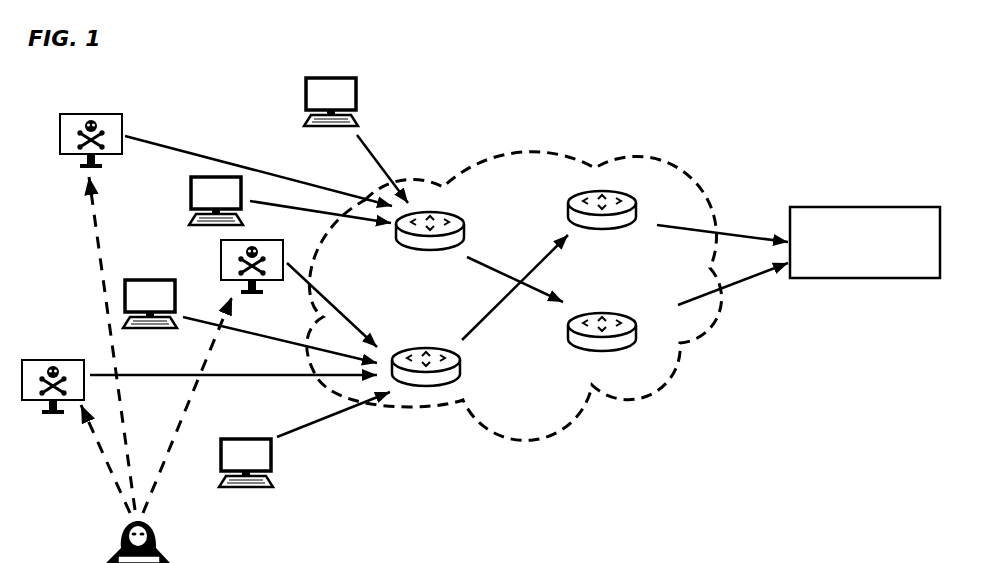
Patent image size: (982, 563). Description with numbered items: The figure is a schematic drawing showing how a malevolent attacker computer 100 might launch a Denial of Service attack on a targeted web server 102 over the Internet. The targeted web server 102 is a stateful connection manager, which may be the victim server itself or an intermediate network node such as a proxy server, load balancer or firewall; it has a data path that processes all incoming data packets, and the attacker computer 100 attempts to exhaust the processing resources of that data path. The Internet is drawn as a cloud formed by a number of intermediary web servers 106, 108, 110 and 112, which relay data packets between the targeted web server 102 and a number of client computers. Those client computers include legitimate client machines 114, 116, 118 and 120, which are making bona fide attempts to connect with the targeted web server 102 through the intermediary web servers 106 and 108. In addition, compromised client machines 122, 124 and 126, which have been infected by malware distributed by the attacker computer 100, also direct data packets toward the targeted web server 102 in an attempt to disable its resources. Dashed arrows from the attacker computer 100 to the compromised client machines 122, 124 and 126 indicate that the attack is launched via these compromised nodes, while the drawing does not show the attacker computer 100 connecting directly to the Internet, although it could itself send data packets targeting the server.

The attacker computer 100 is at (156, 532).
The targeted web server 102 is at (825, 207).
The intermediary web server 106 is at (463, 221).
The intermediary web server 108 is at (413, 346).
The intermediary web server 110 is at (602, 191).
The intermediary web server 112 is at (595, 312).
The legitimate client machine 114 is at (325, 77).
The legitimate client machine 116 is at (193, 178).
The legitimate client machine 118 is at (135, 278).
The legitimate client machine 120 is at (273, 473).
The compromised client machine 122 is at (33, 360).
The compromised client machine 124 is at (76, 113).
The compromised client machine 126 is at (247, 240).